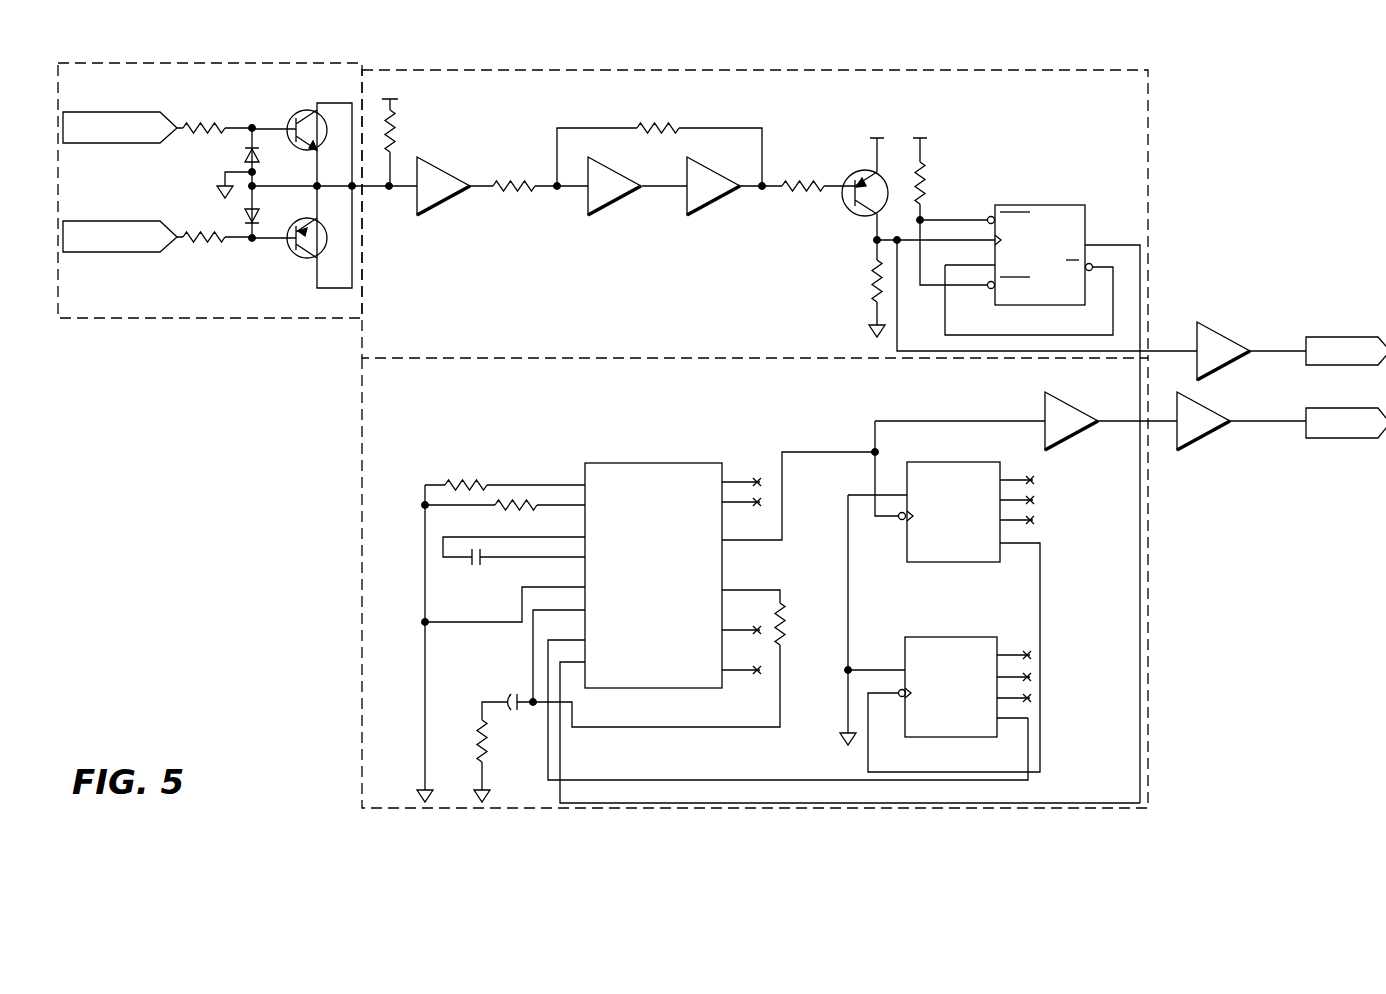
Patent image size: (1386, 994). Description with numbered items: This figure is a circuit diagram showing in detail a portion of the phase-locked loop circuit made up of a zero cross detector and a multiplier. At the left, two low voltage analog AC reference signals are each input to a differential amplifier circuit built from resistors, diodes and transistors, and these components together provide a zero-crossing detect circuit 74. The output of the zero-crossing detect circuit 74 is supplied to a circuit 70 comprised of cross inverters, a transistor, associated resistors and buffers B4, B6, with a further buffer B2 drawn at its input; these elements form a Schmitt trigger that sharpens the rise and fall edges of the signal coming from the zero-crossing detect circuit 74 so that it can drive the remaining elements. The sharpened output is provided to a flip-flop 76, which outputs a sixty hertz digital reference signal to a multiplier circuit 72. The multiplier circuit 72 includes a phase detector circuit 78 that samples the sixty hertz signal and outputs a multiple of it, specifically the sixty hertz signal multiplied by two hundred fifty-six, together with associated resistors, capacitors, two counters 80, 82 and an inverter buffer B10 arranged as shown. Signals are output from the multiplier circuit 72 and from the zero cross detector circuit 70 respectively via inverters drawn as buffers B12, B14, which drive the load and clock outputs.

The circuit 70 is at (674, 74).
The multiplier circuit 72 is at (358, 497).
The zero-crossing detect circuit 74 is at (277, 70).
The flip-flop 76 is at (1061, 207).
The phase detector circuit 78 is at (658, 464).
The counter 80 is at (976, 466).
The counter 82 is at (974, 641).
The buffer U5C B2 is at (426, 168).
The buffer B4 is at (598, 168).
The buffer B6 is at (696, 168).
The buffer U5E B10 is at (1054, 402).
The buffer U5D B12 is at (1187, 396).
The buffer U5F B14 is at (1206, 333).